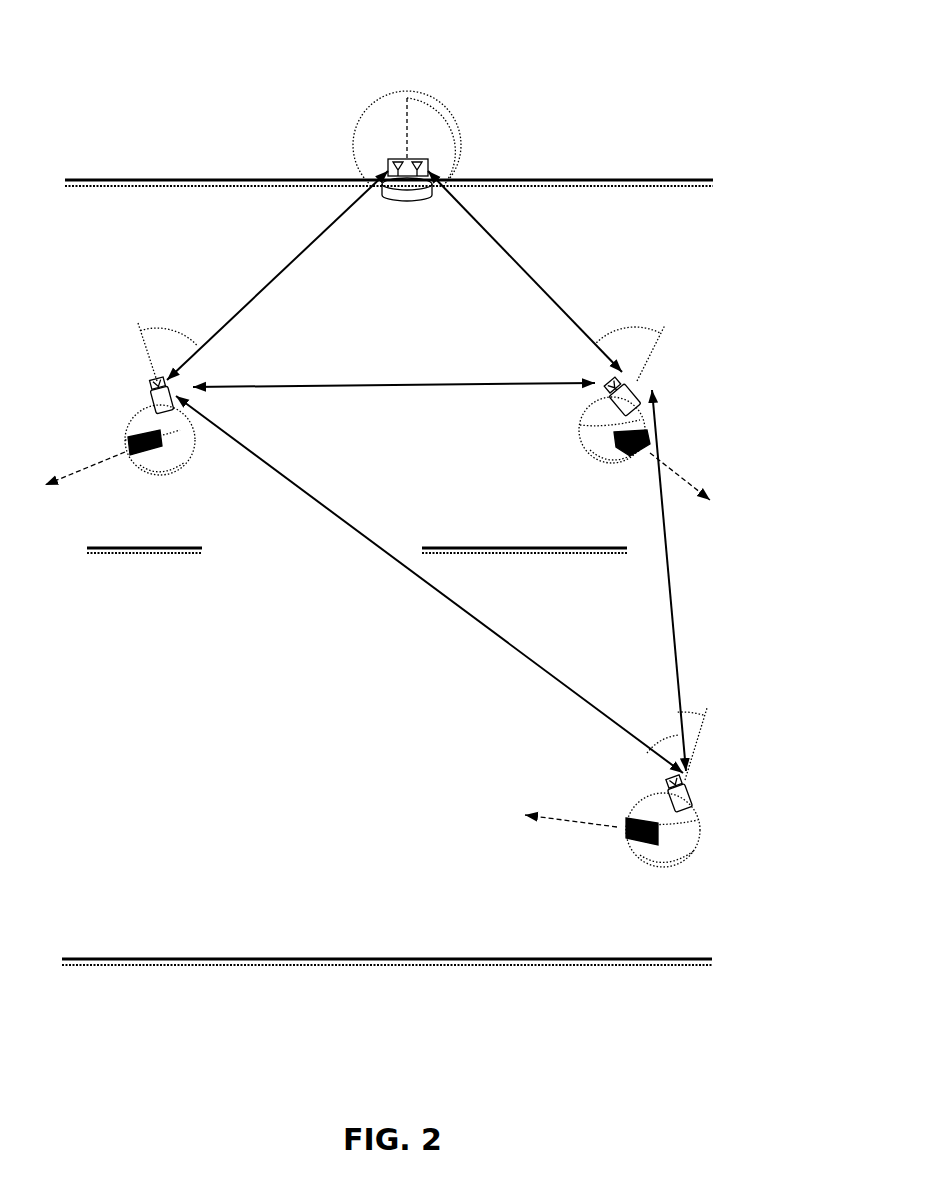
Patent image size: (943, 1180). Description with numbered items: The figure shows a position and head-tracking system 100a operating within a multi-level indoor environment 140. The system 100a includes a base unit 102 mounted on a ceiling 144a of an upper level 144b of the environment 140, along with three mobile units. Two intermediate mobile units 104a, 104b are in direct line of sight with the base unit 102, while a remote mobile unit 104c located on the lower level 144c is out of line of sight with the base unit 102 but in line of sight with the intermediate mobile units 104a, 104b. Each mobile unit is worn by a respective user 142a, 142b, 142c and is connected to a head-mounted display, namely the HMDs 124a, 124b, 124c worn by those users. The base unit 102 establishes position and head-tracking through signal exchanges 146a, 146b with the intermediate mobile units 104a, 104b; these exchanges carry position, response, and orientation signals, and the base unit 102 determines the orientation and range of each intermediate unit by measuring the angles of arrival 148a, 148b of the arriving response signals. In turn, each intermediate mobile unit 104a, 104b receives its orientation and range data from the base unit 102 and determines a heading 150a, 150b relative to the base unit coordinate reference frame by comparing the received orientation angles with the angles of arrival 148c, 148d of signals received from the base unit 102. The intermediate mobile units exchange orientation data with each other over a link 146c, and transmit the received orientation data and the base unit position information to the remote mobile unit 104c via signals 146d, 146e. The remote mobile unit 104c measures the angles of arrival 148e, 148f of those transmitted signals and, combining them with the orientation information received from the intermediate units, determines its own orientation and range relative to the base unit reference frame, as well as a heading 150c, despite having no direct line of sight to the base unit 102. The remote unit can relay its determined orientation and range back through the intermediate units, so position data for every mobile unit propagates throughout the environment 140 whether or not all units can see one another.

The system 100a is at (74, 60).
The multi-level indoor environment 140 is at (655, 107).
The base unit 102 is at (402, 205).
The intermediate mobile unit 104a is at (152, 395).
The intermediate mobile unit 104b is at (612, 390).
The remote mobile unit 104c is at (672, 793).
The HMD 124a is at (128, 440).
The HMD 124b is at (605, 455).
The HMD 124c is at (628, 830).
The user 142a is at (185, 455).
The user 142b is at (575, 415).
The user 142c is at (665, 870).
The ceiling 144a is at (696, 178).
The upper level 144b is at (98, 555).
The lower level 144c is at (308, 958).
The signal exchange 146a is at (285, 262).
The signal exchange 146b is at (520, 262).
The orientation data exchange 146c is at (377, 382).
The transmitted signal 146d is at (315, 508).
The transmitted signal 146e is at (688, 590).
The angle of arrival 148a is at (352, 144).
The angle of arrival 148b is at (473, 110).
The angle of arrival 148c is at (152, 330).
The angle of arrival 148d is at (636, 324).
The angle of arrival 148e is at (660, 745).
The angle of arrival 148f is at (690, 715).
The heading 150a is at (82, 470).
The heading 150b is at (677, 467).
The heading 150c is at (562, 816).